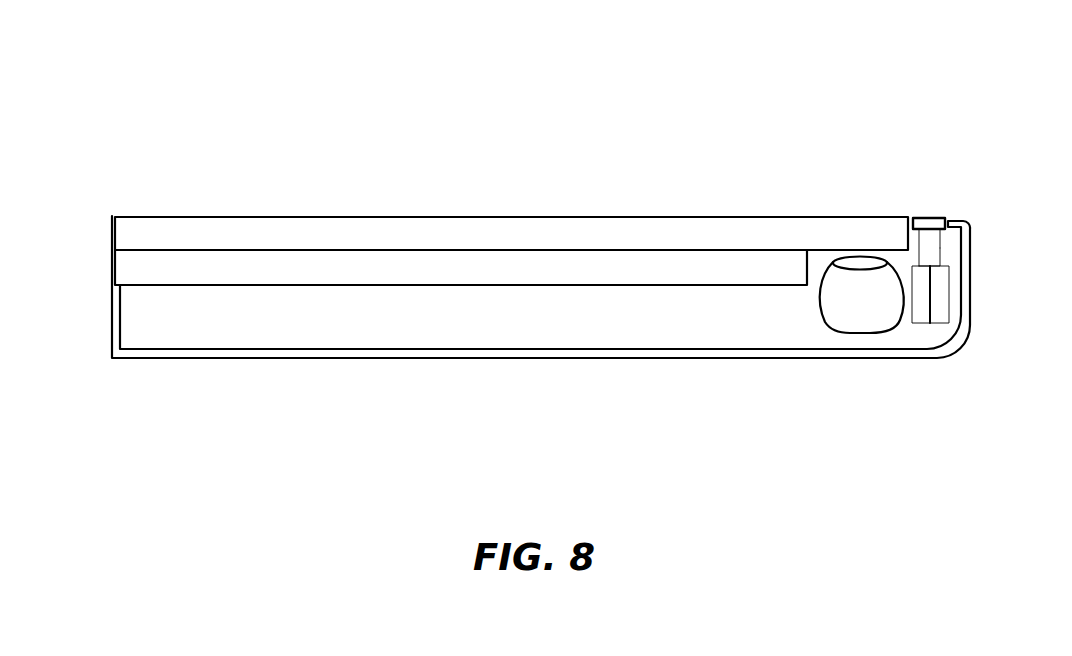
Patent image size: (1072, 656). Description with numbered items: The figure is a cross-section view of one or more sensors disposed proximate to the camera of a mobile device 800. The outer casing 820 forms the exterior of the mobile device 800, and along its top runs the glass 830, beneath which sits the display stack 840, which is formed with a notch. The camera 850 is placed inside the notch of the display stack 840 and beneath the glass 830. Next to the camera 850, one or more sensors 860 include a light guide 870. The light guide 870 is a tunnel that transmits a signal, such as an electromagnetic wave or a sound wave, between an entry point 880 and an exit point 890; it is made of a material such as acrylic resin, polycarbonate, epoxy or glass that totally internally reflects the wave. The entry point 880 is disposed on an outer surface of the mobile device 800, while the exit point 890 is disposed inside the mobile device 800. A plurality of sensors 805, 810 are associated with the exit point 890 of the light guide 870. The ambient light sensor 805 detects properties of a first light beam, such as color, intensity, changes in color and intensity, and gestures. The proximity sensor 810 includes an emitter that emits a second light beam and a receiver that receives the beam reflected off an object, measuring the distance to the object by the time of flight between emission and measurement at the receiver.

The mobile device 800 is at (950, 120).
The ambient light sensor 805 is at (940, 323).
The proximity sensor 810 is at (912, 323).
The outer casing 820 is at (548, 350).
The glass 830 is at (117, 220).
The display stack 840 is at (120, 270).
The camera 850 is at (838, 332).
The sensors 860 is at (938, 220).
The light guide 870 is at (940, 248).
The entry point 880 is at (940, 235).
The exit point 890 is at (930, 265).